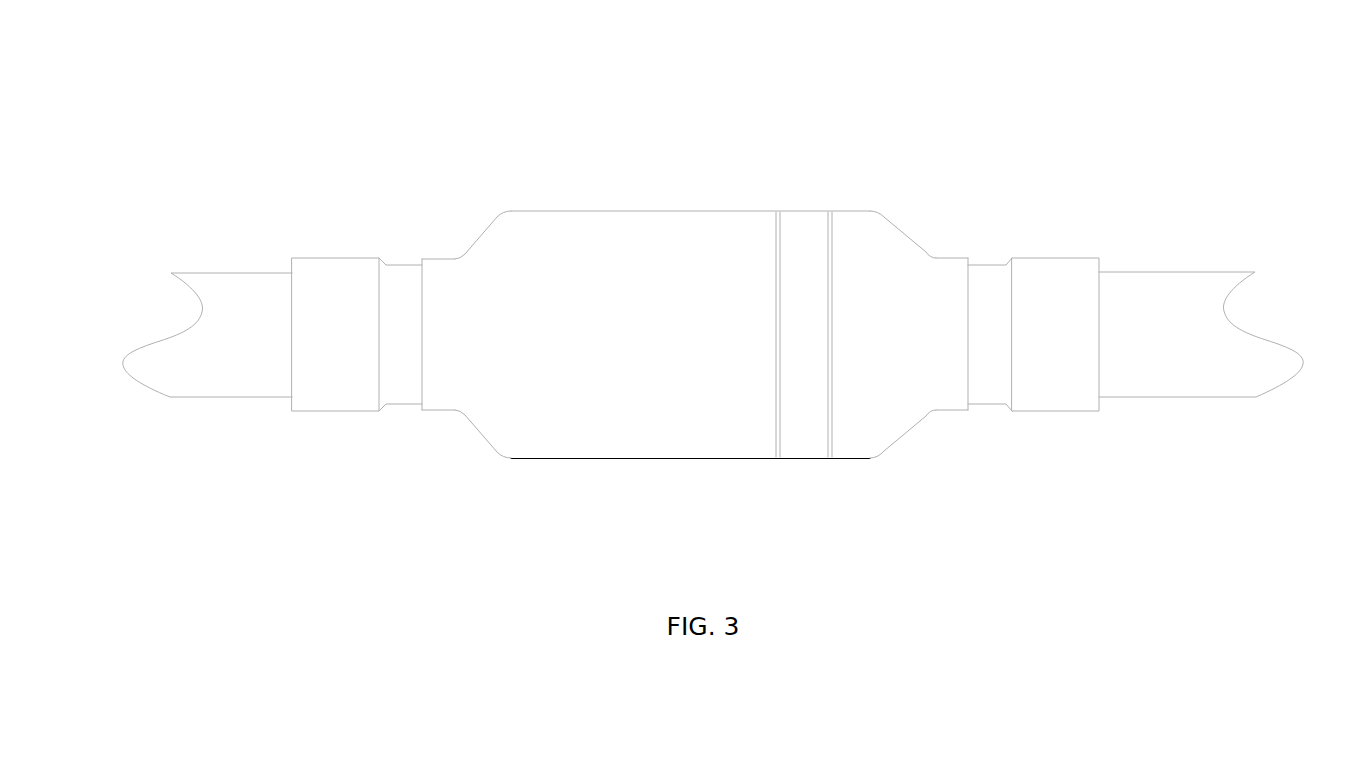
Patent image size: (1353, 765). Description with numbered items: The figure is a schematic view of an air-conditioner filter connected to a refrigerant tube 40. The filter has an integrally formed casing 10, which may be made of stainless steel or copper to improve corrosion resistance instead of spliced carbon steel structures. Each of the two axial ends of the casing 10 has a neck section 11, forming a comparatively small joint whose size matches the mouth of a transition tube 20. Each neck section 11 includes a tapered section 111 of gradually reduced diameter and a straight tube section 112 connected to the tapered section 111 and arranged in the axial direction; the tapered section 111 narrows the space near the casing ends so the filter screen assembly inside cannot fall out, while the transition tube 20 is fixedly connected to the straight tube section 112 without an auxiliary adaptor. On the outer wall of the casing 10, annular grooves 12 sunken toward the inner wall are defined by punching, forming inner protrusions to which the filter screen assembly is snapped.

The casing 10 is at (645, 210).
The neck section 11 is at (702, 281).
The tapered section 111 is at (492, 223).
The straight tube section 112 is at (697, 287).
The annular groove 12 is at (778, 470).
The transition tube 20 is at (336, 258).
The refrigerant tube 40 is at (232, 272).